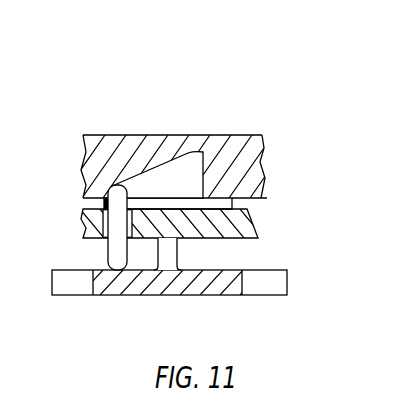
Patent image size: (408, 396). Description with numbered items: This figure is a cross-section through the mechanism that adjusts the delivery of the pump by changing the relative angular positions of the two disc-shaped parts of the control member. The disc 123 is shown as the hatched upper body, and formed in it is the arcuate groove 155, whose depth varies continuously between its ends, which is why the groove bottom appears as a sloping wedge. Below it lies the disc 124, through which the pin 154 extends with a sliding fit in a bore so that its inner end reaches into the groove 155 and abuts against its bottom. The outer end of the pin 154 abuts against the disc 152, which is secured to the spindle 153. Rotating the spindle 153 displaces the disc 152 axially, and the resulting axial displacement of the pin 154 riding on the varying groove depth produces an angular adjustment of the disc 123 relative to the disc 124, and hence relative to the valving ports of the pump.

The disc 123 is at (232, 155).
The arcuate groove 155 is at (156, 183).
The disc 124 is at (240, 228).
The disc 152 is at (110, 277).
The spindle 153 is at (178, 257).
The pin 154 is at (113, 254).